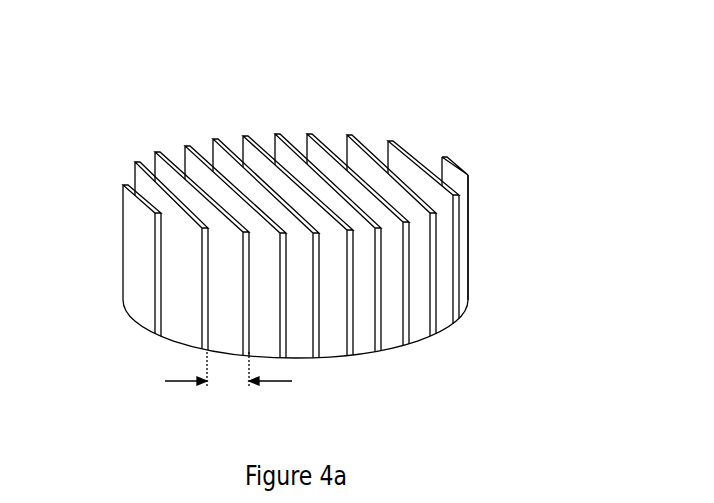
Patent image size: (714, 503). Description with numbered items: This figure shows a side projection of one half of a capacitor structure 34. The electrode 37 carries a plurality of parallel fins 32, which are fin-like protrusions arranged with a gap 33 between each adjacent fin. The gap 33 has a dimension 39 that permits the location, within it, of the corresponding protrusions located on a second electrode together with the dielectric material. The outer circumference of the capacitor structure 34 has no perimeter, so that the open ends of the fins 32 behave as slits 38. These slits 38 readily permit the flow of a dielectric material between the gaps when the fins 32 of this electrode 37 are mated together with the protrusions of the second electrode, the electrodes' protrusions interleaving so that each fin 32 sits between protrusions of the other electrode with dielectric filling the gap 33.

The fins 32 is at (468, 175).
The gap 33 is at (136, 180).
The capacitor structure 34 is at (458, 118).
The electrode 37 is at (397, 351).
The slits 38 is at (202, 140).
The dimension 39 is at (182, 380).